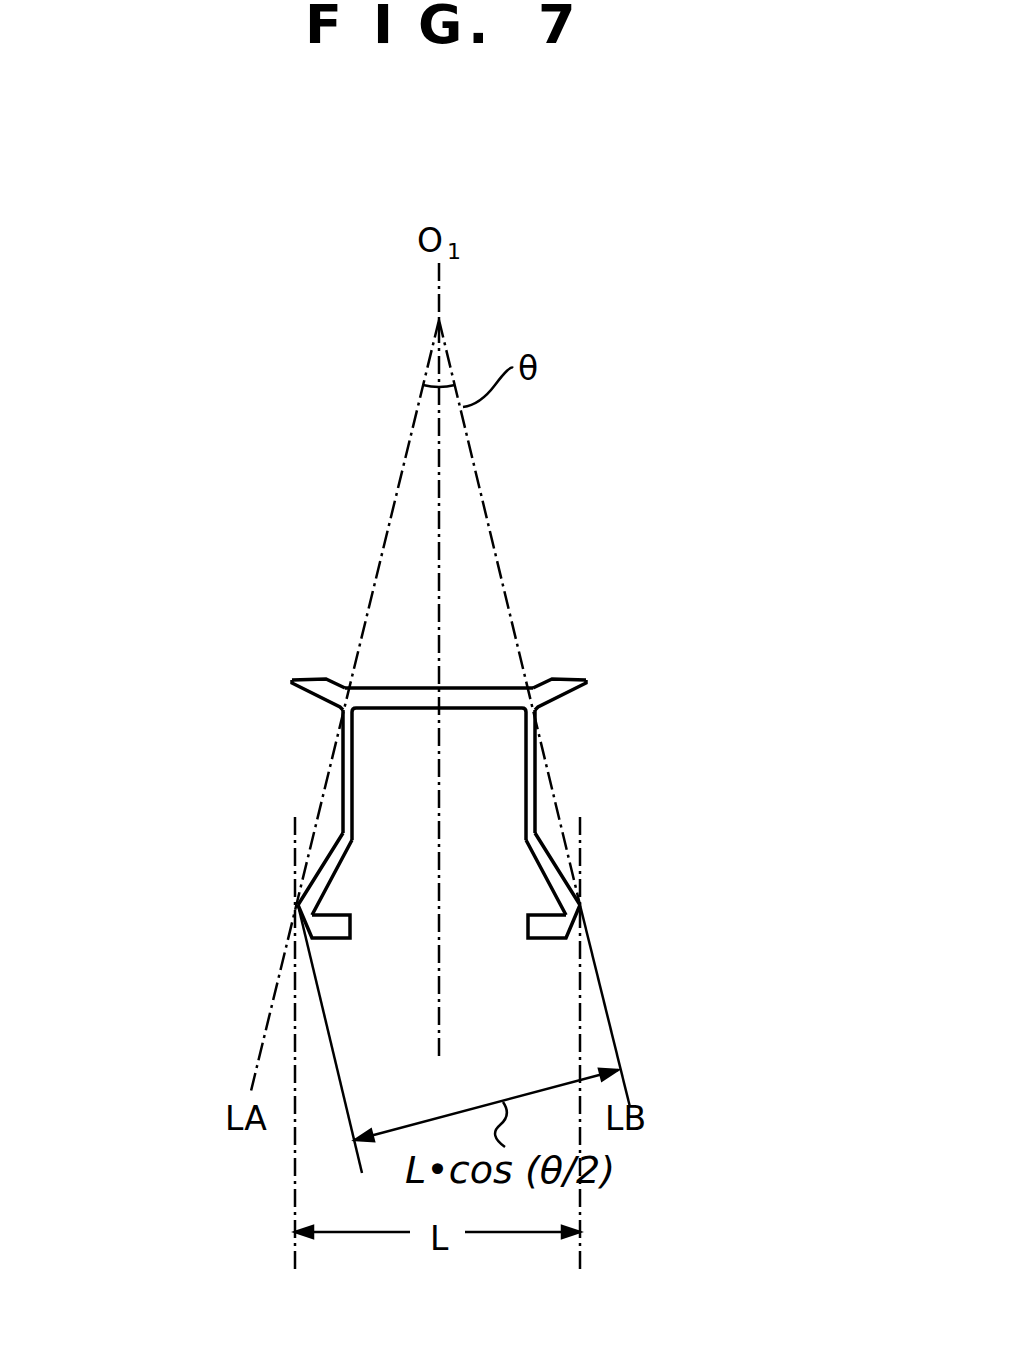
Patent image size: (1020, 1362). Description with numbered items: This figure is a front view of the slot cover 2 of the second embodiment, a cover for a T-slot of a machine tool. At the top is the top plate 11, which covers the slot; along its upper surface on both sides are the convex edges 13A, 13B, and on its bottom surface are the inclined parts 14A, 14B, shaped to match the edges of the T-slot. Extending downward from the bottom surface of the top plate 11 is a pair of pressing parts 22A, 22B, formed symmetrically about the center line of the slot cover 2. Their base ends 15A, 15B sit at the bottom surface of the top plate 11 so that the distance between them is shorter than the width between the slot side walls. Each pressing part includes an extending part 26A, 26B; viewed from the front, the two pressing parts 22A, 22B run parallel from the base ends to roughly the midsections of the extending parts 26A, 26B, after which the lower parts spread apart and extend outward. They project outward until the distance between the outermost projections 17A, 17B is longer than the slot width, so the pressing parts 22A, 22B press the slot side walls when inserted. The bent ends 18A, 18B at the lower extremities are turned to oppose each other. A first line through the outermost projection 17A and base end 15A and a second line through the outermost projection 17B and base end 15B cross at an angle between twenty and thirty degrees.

The slot cover 2 is at (715, 453).
The top plate 11 is at (480, 686).
The convex edge 13A is at (310, 690).
The convex edge 13B is at (565, 690).
The inclined part 14A is at (312, 697).
The inclined part 14B is at (566, 697).
The base end 15A is at (338, 712).
The base end 15B is at (540, 712).
The extending part 26A is at (342, 815).
The extending part 26B is at (536, 815).
The pressing part 22A is at (172, 723).
The pressing part 22B is at (703, 723).
The outermost projection 17A is at (297, 905).
The outermost projection 17B is at (580, 905).
The top end 18A is at (336, 928).
The top end 18B is at (541, 928).